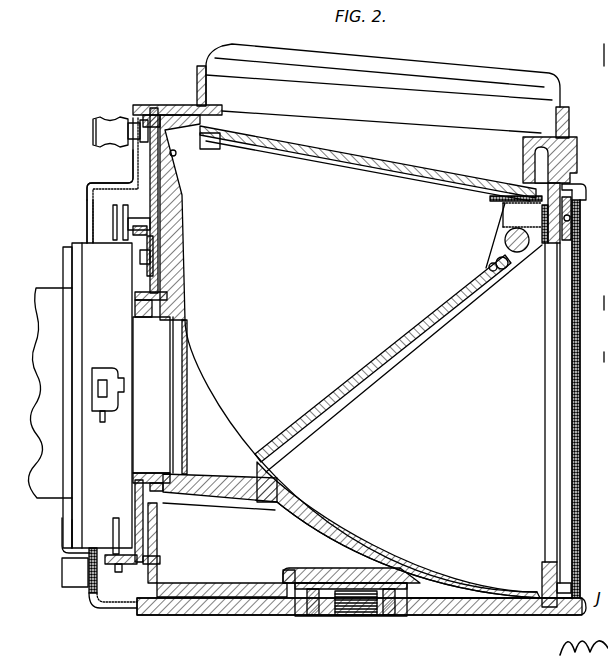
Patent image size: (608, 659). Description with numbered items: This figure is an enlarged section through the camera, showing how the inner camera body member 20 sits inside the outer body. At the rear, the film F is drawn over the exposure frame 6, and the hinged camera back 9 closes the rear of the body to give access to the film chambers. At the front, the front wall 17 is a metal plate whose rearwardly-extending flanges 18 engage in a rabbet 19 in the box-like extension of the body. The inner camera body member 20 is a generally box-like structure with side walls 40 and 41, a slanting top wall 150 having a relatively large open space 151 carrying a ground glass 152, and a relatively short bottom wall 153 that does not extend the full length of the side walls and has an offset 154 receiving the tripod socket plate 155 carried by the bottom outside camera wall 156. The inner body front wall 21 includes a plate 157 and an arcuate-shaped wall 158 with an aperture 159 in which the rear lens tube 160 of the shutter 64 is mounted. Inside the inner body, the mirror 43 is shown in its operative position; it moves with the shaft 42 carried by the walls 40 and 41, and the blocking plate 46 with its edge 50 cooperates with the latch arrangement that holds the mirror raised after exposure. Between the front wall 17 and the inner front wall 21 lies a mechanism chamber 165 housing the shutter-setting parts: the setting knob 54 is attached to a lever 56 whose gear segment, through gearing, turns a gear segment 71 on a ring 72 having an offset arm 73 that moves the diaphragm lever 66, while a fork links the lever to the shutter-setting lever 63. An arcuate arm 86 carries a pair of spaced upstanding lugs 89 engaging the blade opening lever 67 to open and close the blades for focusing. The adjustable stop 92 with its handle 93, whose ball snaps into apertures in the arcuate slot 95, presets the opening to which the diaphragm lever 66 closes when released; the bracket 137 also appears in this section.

The exposure frame 6 is at (546, 351).
The camera back 9 is at (578, 449).
The front wall 17 is at (84, 200).
The flanges 18 is at (150, 106).
The rabbet 19 is at (166, 106).
The inner camera body member 20 is at (247, 502).
The front wall of inner camera body 21 is at (162, 250).
The side wall of inner body section 40 is at (604, 52).
The side wall of inner body section 41 is at (404, 337).
The shaft 42 is at (504, 235).
The mirror 43 is at (400, 339).
The blocking plate 46 is at (604, 300).
The edge of blocking plate 50 is at (599, 341).
The setting knob 54 is at (100, 118).
The lever 56 is at (150, 155).
The shutter-setting lever 63 is at (108, 231).
The shutter 64 is at (102, 395).
The diaphragm lever 66 is at (115, 518).
The blade opening lever 67 is at (97, 378).
The gear segment 71 is at (133, 296).
The ring 72 is at (146, 530).
The offset arm 73 is at (110, 552).
The arcuate arm 86 is at (158, 560).
The upstanding lugs 89 is at (112, 421).
The adjustable stop 92 is at (62, 541).
The handle 93 is at (62, 576).
The arcuate slot 95 is at (90, 572).
The side bracket 137 is at (70, 276).
The slanting top wall 150 is at (270, 152).
The open space 151 is at (506, 194).
The ground glass 152 is at (372, 168).
The bottom wall 153 is at (234, 585).
The offset 154 is at (382, 578).
The tripod socket plate 155 is at (326, 600).
The bottom outside camera wall 156 is at (404, 613).
The plate 157 is at (168, 510).
The arcuate-shaped wall 158 is at (215, 395).
The aperture 159 is at (214, 421).
The rear lens tube 160 is at (153, 400).
The mechanism chamber 165 is at (92, 190).
The film F is at (556, 387).